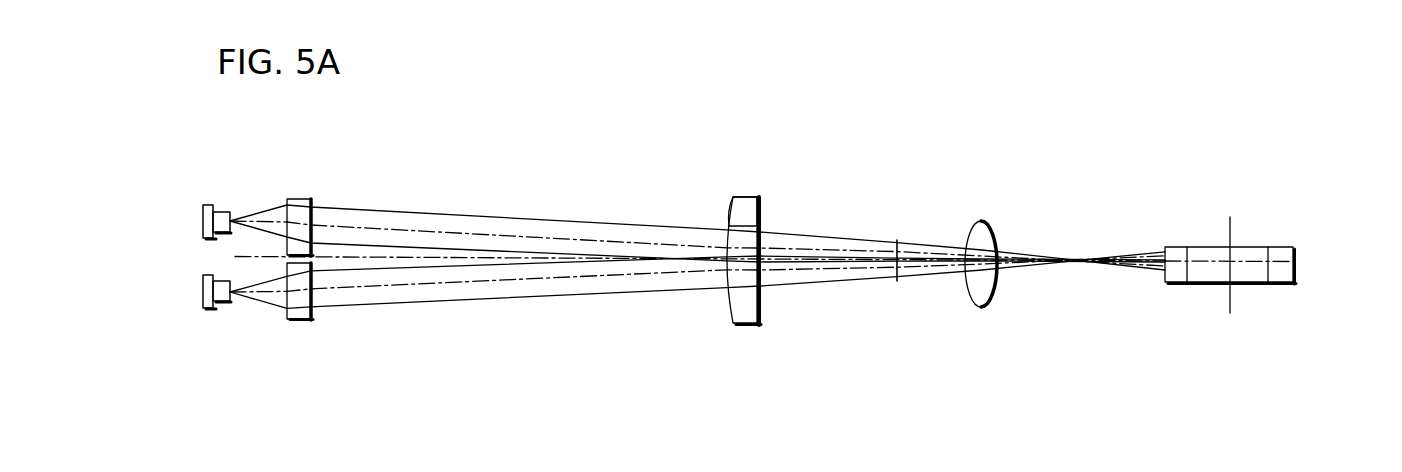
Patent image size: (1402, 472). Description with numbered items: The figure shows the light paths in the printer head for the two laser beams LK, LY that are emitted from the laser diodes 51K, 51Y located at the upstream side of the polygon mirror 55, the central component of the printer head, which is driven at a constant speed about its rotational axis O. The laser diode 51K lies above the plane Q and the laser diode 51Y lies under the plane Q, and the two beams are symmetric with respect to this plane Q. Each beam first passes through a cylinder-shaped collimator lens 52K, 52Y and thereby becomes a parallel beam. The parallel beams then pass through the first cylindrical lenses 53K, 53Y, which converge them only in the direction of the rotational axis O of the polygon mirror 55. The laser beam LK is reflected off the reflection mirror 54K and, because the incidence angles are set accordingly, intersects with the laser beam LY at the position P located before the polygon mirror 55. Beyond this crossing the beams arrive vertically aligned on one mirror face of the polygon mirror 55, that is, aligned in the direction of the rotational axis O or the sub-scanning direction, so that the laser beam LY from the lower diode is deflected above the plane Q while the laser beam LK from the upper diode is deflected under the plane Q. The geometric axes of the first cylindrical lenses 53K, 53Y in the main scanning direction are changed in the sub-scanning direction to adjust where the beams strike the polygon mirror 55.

The laser diode 51K is at (203, 219).
The laser diode 51Y is at (203, 303).
The cylinder-shaped collimator lens 52K is at (300, 206).
The cylinder-shaped collimator lens 52Y is at (297, 316).
The first cylindrical lens 53K is at (743, 208).
The first cylindrical lens 53Y is at (742, 315).
The reflection mirror 54K is at (897, 240).
The polygon mirror 55 is at (1203, 247).
The position P is at (980, 220).
The plane Q is at (248, 256).
The rotational axis O is at (1230, 227).
The laser beam LK is at (258, 222).
The laser beam LY is at (273, 291).